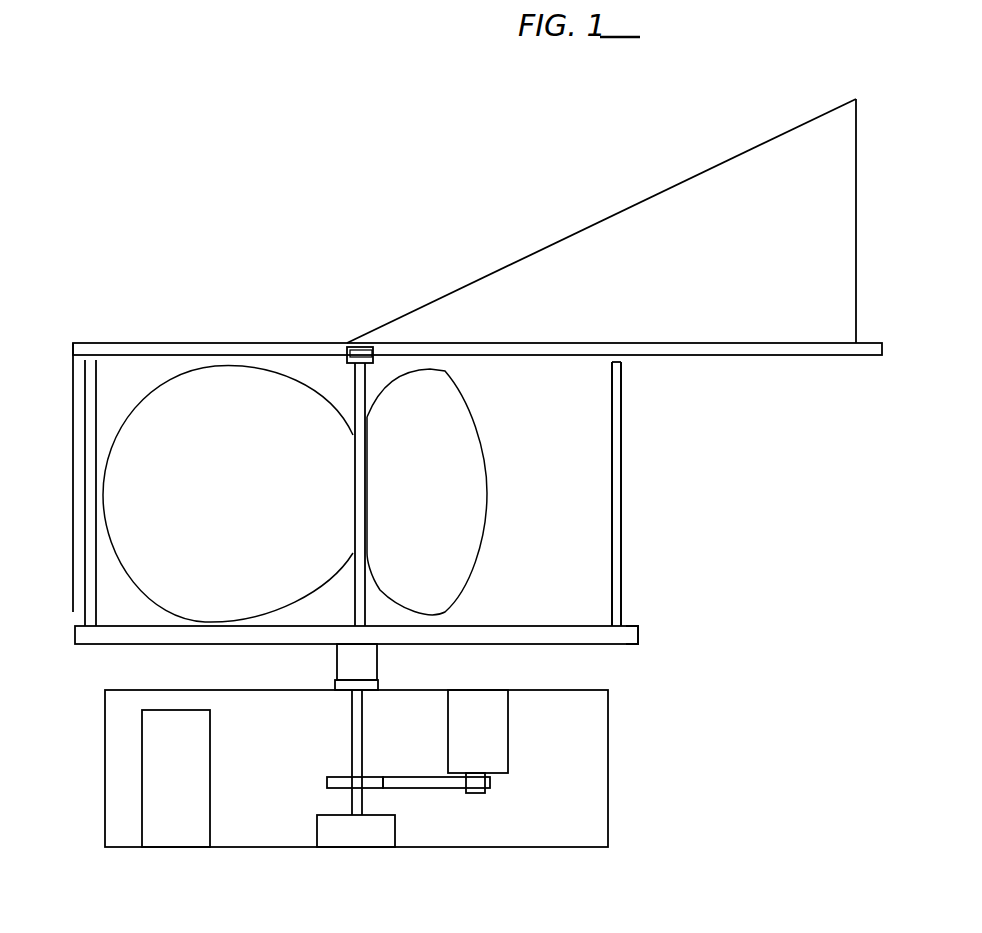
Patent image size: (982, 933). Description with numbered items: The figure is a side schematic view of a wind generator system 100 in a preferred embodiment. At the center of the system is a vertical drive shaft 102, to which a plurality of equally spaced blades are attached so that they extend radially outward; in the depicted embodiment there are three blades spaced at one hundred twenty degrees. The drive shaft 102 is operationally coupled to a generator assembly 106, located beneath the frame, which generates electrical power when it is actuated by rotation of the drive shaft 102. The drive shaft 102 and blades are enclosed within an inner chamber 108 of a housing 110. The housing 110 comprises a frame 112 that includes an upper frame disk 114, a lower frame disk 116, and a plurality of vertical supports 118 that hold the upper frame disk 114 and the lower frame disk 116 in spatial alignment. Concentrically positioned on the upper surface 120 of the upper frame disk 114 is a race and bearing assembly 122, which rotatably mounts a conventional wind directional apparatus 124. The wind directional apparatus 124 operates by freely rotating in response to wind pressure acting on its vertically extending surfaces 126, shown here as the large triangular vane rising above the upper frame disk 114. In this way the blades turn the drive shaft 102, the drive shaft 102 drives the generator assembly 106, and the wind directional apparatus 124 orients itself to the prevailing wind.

The wind generator system 100 is at (295, 206).
The drive shaft 102 is at (350, 605).
The generator assembly 106 is at (518, 738).
The inner chamber 108 is at (590, 436).
The housing 110 is at (638, 385).
The frame 112 is at (640, 616).
The upper frame disk 114 is at (90, 348).
The lower frame disk 116 is at (615, 637).
The vertical supports 118 is at (618, 516).
The upper surface 120 is at (195, 349).
The race and bearing assembly 122 is at (347, 345).
The wind directional apparatus 124 is at (625, 195).
The vertically extending surfaces 126 is at (698, 272).